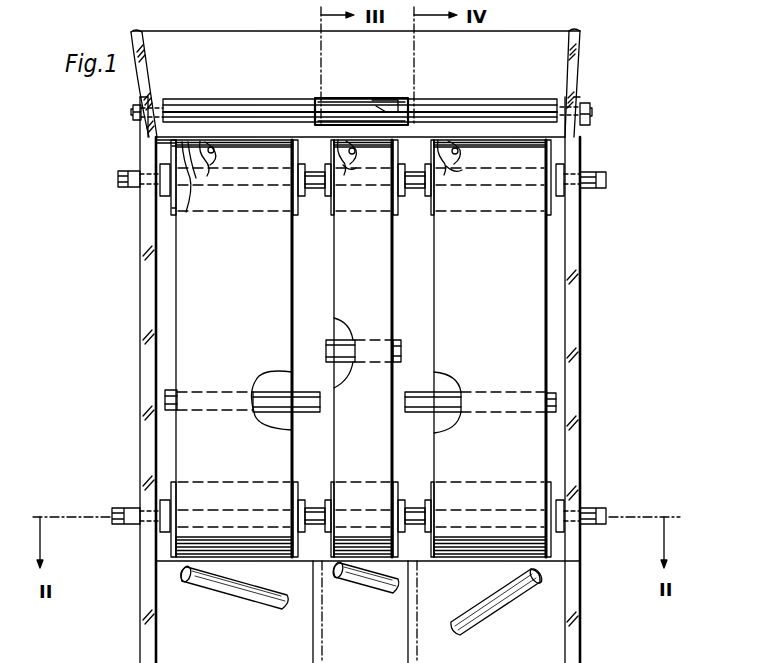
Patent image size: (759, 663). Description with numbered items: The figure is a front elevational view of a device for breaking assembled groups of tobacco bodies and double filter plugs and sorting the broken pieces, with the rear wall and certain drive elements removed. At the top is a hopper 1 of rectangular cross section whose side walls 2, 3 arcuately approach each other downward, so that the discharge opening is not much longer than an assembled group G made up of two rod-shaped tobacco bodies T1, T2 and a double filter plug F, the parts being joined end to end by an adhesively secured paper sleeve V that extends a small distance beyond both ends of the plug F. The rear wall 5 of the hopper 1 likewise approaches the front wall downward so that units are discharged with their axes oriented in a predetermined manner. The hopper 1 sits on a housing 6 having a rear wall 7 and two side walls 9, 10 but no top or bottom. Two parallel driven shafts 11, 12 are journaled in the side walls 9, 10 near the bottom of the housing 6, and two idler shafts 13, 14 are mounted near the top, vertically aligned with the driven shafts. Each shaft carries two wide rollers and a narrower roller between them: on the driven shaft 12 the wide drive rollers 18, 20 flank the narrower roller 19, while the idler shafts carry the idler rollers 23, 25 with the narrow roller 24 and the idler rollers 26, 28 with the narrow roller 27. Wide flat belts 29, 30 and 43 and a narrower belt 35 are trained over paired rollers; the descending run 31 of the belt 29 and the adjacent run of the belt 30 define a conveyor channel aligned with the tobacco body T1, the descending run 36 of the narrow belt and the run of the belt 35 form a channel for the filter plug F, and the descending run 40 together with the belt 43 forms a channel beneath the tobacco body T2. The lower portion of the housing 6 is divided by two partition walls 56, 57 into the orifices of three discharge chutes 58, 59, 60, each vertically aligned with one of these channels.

The hopper 1 is at (584, 75).
The side wall 2 is at (153, 83).
The side wall 3 is at (564, 74).
The rear wall 5 is at (282, 68).
The housing 6 is at (582, 354).
The rear wall 7 is at (318, 296).
The side wall 9 is at (139, 349).
The side wall 10 is at (586, 450).
The driven shaft 11 is at (121, 525).
The driven shaft 12 is at (594, 521).
The idler shaft 13 is at (116, 186).
The idler shaft 14 is at (601, 184).
The wide drive roller 18 is at (173, 483).
The narrow roller 19 is at (328, 490).
The wide drive roller 20 is at (428, 490).
The idler roller 23 is at (170, 148).
The narrow idler roller 24 is at (326, 160).
The idler roller 25 is at (427, 160).
The idler roller 26 is at (219, 154).
The narrow idler roller 27 is at (352, 158).
The idler roller 28 is at (461, 164).
The wide flat belt 29 is at (156, 144).
The wide flat belt 30 is at (247, 322).
The descending run 31 is at (188, 158).
The narrow flat belt 35 is at (380, 324).
The descending run 36 is at (337, 138).
The descending run 40 is at (436, 139).
The wide flat belt 43 is at (507, 326).
The partition wall 56 is at (313, 619).
The partition wall 57 is at (409, 653).
The discharge chute 58 is at (250, 652).
The discharge chute 59 is at (375, 644).
The discharge chute 60 is at (520, 644).
The tobacco body T1 is at (240, 103).
The tobacco body T2 is at (525, 108).
The paper sleeve V is at (348, 100).
The double filter plug F is at (397, 101).
The assembled group G is at (485, 100).